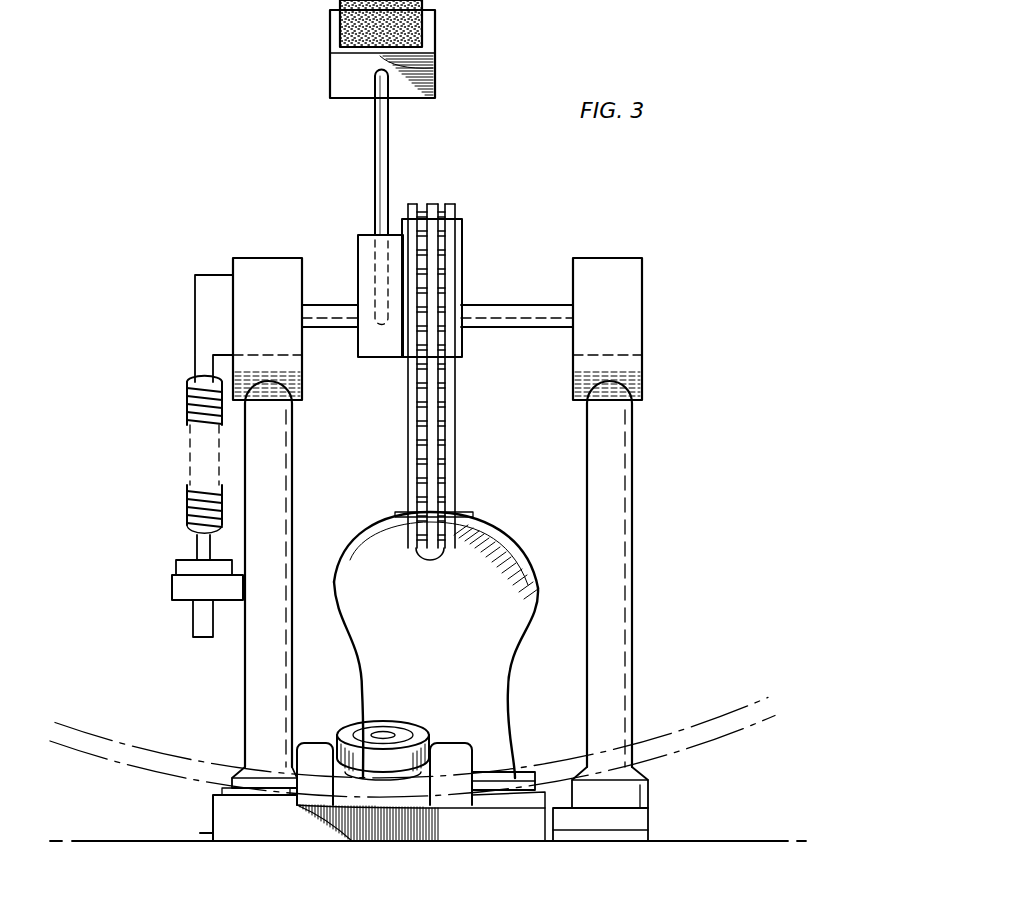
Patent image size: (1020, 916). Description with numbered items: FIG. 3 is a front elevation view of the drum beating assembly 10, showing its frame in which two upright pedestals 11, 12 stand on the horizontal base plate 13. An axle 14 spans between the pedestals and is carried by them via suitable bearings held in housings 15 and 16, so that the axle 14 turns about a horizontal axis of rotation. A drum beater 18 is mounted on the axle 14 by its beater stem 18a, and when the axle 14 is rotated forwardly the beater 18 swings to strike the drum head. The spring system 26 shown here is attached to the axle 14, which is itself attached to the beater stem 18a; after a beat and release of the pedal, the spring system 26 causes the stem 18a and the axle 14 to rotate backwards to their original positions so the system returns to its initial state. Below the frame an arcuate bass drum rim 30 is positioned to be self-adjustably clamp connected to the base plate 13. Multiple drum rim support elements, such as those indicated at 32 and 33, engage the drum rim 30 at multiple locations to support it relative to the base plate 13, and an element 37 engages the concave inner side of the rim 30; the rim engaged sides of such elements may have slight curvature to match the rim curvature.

The drum beating assembly 10 is at (212, 803).
The upright pedestal 11 is at (615, 475).
The upright pedestal 12 is at (250, 698).
The horizontal base plate 13 is at (497, 572).
The axle 14 is at (510, 305).
The bearing housing 15 is at (627, 352).
The bearing housing 16 is at (265, 262).
The drum beater 18 is at (408, 18).
The beater stem 18a is at (378, 160).
The spring system 26 is at (193, 457).
The arcuate bass drum rim 30 is at (732, 710).
The drum rim support element 32 is at (262, 800).
The drum rim support element 33 is at (520, 795).
The rim engaging element 37 is at (375, 778).